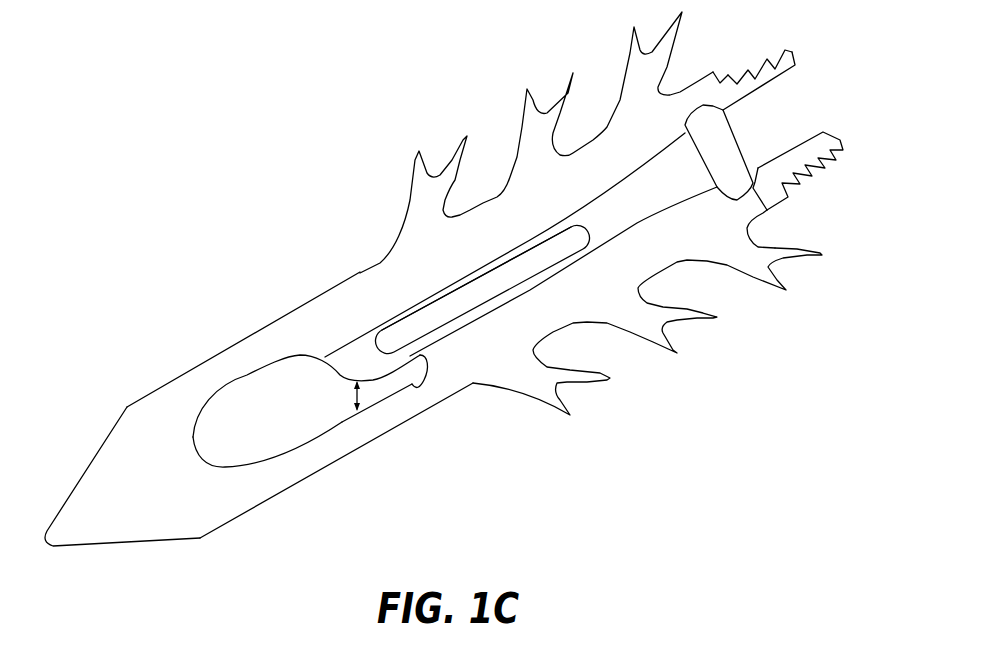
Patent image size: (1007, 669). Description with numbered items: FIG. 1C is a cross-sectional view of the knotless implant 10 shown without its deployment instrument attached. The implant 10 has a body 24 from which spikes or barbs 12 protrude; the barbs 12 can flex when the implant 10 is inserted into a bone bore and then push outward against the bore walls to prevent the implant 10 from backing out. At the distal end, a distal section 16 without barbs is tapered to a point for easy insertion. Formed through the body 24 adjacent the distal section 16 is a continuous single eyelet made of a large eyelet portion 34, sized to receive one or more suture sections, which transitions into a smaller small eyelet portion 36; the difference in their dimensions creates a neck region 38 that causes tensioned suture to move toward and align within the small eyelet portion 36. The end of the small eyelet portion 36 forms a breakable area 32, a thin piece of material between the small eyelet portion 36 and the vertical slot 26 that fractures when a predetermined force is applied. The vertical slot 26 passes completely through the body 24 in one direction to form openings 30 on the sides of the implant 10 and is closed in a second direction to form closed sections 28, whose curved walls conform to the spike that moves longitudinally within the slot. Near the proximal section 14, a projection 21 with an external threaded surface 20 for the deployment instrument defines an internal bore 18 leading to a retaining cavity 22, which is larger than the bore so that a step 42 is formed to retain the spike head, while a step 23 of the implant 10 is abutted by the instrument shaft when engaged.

The knotless implant 10 is at (448, 274).
The barbs 12 is at (523, 110).
The proximal section 14 is at (780, 70).
The distal section 16 is at (87, 463).
The internal bore 18 is at (758, 95).
The external threaded surface 20 is at (811, 167).
The projection 21 is at (786, 64).
The retaining cavity 22 is at (700, 107).
The step 23 is at (721, 80).
The body 24 is at (248, 337).
The vertical slot 26 is at (465, 286).
The closed sections 28 is at (610, 208).
The openings 30 is at (417, 323).
The breakable area 32 is at (414, 398).
The large eyelet portion 34 is at (284, 444).
The small eyelet portion 36 is at (378, 396).
The neck region 38 is at (354, 395).
The step 42 is at (756, 192).